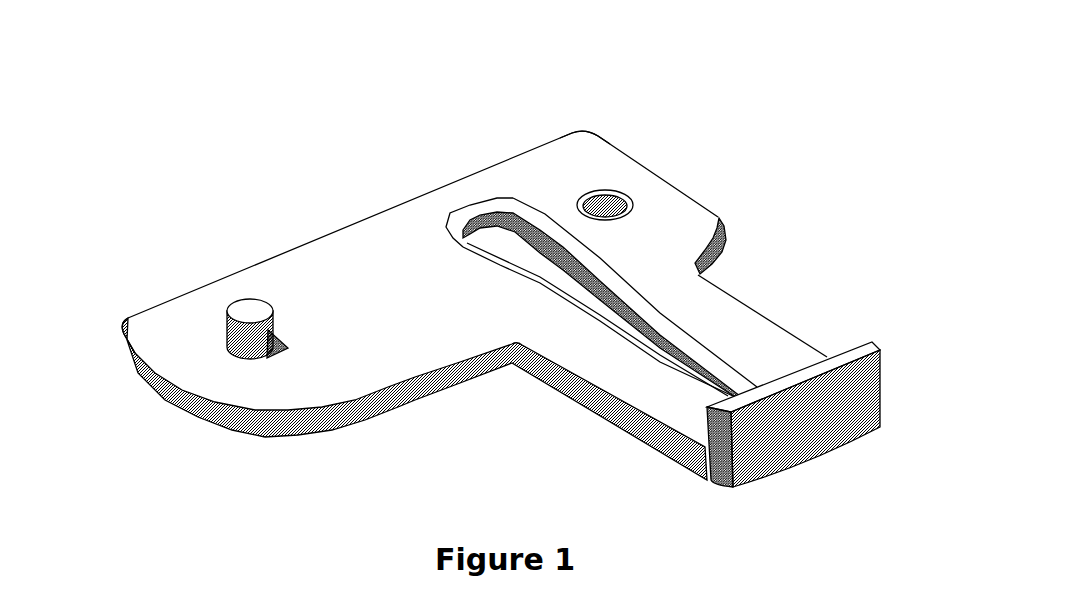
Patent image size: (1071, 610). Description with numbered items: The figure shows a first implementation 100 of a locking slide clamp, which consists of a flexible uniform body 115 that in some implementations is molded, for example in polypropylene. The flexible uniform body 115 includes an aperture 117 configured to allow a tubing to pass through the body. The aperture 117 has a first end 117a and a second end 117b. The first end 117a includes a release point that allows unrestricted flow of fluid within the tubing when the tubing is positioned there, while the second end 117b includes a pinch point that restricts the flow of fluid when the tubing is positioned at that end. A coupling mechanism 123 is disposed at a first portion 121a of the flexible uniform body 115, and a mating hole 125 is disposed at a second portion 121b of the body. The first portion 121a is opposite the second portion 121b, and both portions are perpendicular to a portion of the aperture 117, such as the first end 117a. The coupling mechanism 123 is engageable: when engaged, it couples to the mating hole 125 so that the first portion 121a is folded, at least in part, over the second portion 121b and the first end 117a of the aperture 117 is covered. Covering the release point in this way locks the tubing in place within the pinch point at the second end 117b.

The first implementation of the locking slide clamp 100 is at (154, 67).
The flexible uniform body 115 is at (391, 240).
The aperture 117 is at (499, 240).
The first end of the aperture 117a is at (463, 222).
The second end of the aperture 117b is at (730, 380).
The first portion of the flexible uniform body 121a is at (145, 323).
The second portion of the flexible uniform body 121b is at (583, 156).
The coupling mechanism 123 is at (238, 336).
The mating hole 125 is at (602, 192).